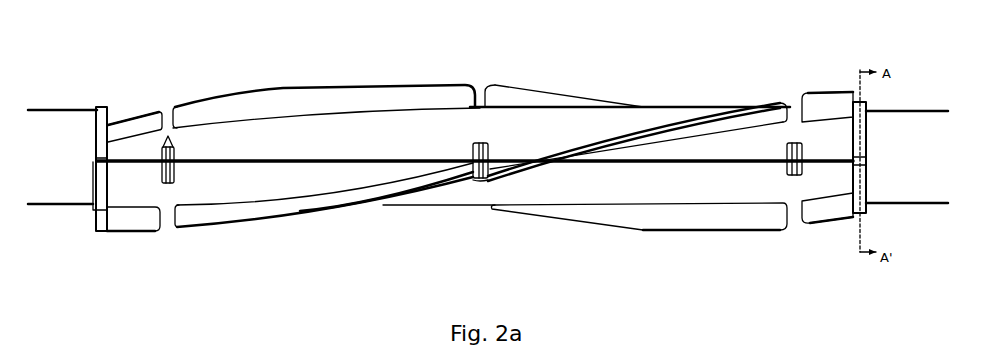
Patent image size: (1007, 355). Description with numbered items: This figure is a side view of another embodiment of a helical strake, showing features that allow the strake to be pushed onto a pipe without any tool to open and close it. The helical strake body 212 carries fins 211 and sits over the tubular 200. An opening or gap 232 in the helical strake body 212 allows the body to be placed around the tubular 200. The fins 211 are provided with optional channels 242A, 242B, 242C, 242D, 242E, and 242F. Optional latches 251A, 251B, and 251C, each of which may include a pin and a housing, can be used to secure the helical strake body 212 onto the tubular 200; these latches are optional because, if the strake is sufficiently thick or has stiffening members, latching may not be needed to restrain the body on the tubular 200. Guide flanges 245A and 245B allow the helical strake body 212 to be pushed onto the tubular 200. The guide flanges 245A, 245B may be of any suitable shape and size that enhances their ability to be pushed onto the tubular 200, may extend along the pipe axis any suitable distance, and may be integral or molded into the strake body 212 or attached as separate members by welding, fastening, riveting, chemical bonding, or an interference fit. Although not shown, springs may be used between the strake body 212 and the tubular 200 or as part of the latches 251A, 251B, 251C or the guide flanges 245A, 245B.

The tubular 200 is at (50, 109).
The fins 211 is at (203, 211).
The helical strake body 212 is at (380, 131).
The opening or gap 232 is at (445, 157).
The channel 242A is at (168, 118).
The channel 242B is at (481, 92).
The channel 242C is at (793, 100).
The channel 242D is at (169, 222).
The channel 242E is at (486, 181).
The channel 242F is at (789, 220).
The guide flange 245A is at (864, 150).
The guide flange 245B is at (93, 150).
The latch 251A is at (165, 181).
The latch 251B is at (477, 179).
The latch 251C is at (780, 173).